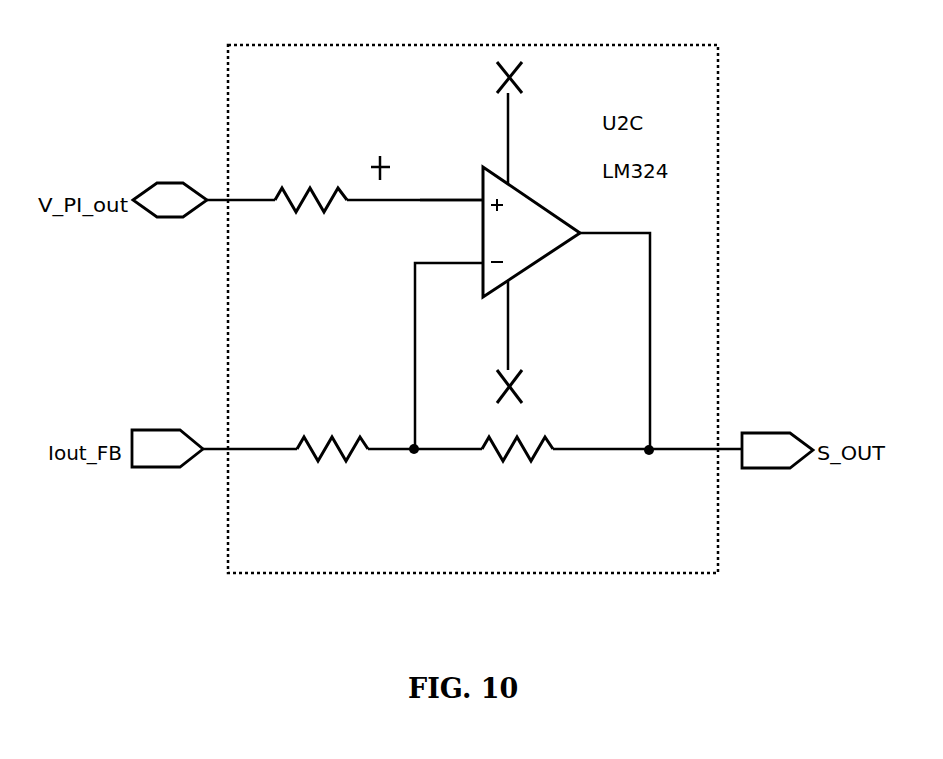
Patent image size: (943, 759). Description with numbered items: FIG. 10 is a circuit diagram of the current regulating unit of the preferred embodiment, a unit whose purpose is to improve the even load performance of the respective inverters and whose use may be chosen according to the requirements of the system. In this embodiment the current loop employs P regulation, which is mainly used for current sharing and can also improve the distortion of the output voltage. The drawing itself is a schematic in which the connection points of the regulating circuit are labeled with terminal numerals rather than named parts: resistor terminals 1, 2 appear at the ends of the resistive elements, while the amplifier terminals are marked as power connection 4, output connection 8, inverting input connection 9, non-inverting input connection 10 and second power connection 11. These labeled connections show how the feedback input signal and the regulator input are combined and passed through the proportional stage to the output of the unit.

The resistor pin 1 is at (403, 334).
The resistor pin 2 is at (343, 314).
The op amp power pin 4 is at (505, 123).
The op amp output pin 8 is at (647, 333).
The op amp inverting input pin 9 is at (446, 348).
The op amp non-inverting input pin 10 is at (451, 189).
The op amp power pin 11 is at (505, 341).